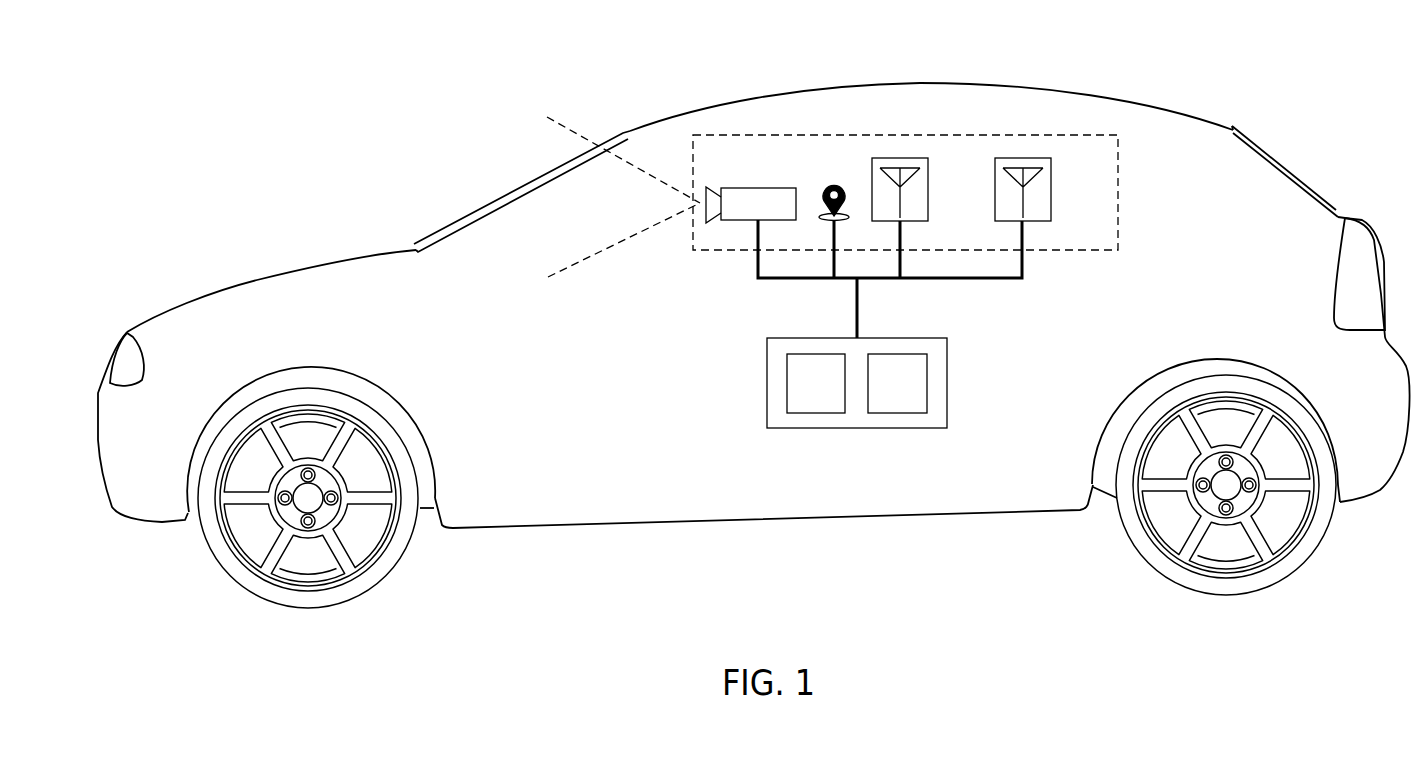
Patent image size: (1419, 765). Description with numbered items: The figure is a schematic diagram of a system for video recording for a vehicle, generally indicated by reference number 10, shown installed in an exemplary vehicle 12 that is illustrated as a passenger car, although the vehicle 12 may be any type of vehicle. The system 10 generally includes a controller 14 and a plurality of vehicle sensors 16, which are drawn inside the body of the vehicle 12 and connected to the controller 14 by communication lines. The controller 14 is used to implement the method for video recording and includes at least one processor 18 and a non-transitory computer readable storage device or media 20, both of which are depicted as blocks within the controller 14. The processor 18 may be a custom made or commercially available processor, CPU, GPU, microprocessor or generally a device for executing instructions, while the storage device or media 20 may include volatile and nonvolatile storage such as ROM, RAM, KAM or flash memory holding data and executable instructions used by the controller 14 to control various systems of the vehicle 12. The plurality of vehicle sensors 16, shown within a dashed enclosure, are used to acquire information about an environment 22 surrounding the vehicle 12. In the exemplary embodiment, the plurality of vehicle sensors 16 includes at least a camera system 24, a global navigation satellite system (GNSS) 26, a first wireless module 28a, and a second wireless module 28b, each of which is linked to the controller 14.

The system for video recording for a vehicle 10 is at (754, 327).
The vehicle 12 is at (1133, 97).
The controller 14 is at (900, 388).
The plurality of vehicle sensors 16 is at (735, 250).
The processor 18 is at (830, 395).
The non-transitory computer readable storage device or media 20 is at (911, 395).
The environment 22 is at (248, 136).
The camera system 24 is at (772, 216).
The global navigation satellite system (GNSS) 26 is at (834, 186).
The first wireless module 28a is at (928, 172).
The second wireless module 28b is at (1051, 172).